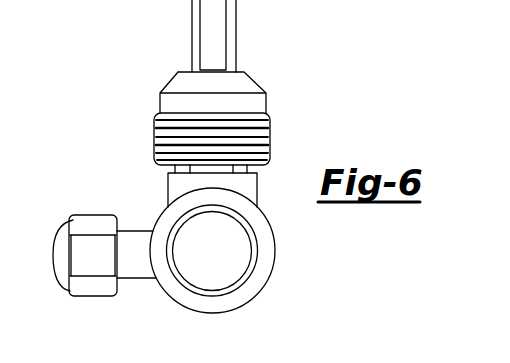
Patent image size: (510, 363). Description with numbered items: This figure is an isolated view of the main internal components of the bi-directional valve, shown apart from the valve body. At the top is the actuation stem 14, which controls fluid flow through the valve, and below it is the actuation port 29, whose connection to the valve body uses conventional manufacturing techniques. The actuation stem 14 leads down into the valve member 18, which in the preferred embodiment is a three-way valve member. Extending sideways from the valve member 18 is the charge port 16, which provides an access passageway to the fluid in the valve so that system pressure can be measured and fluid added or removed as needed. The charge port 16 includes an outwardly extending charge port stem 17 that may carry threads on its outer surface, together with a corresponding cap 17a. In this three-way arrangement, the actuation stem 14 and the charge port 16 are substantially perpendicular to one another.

The actuation stem 14 is at (236, 36).
The actuation port 29 is at (237, 142).
The valve member 18 is at (247, 282).
The charge port stem 17 is at (127, 242).
The cap 17a is at (79, 235).
The charge port 16 is at (130, 293).